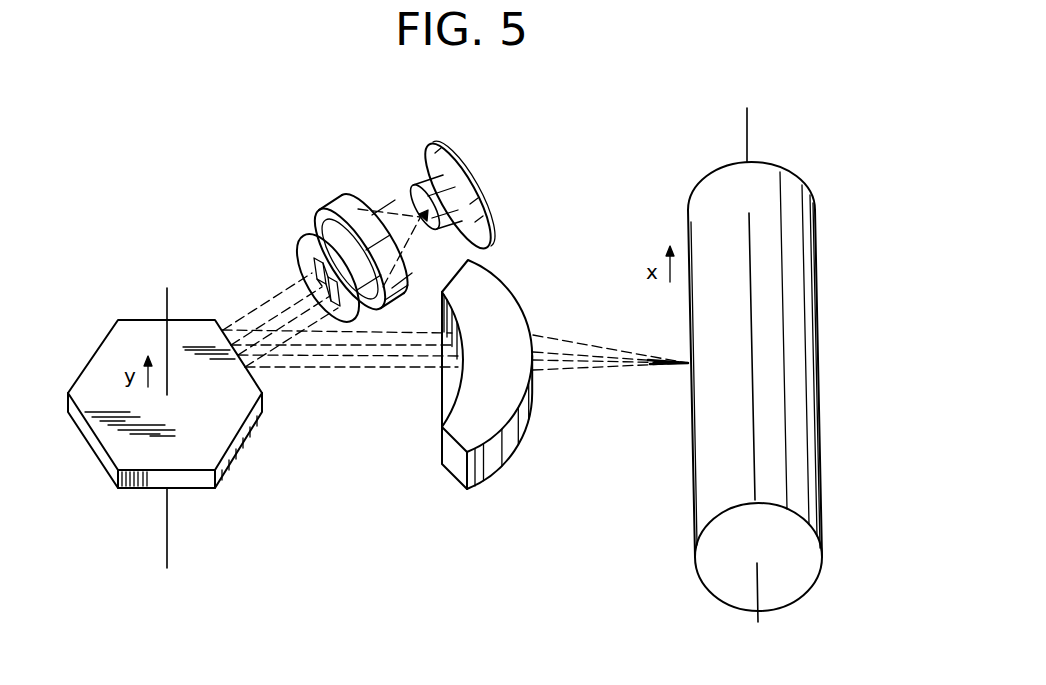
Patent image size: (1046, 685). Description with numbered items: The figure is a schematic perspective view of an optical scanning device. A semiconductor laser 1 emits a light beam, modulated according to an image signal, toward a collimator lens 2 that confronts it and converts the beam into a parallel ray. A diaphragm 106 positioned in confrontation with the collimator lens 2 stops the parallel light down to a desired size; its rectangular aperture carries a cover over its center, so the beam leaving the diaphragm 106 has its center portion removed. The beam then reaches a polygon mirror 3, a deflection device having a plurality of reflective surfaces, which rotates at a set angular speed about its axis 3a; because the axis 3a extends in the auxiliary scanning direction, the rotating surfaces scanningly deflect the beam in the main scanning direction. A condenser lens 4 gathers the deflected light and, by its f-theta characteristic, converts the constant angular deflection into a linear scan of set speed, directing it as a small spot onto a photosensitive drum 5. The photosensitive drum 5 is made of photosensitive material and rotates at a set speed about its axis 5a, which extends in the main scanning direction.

The semiconductor laser 1 is at (428, 163).
The collimator lens 2 is at (346, 221).
The diaphragm 106 is at (307, 252).
The polygon mirror 3 is at (134, 331).
The axis of the polygon mirror 3a is at (172, 302).
The condenser lens 4 is at (468, 403).
The photosensitive drum 5 is at (708, 213).
The axis of the photosensitive drum 5a is at (749, 131).